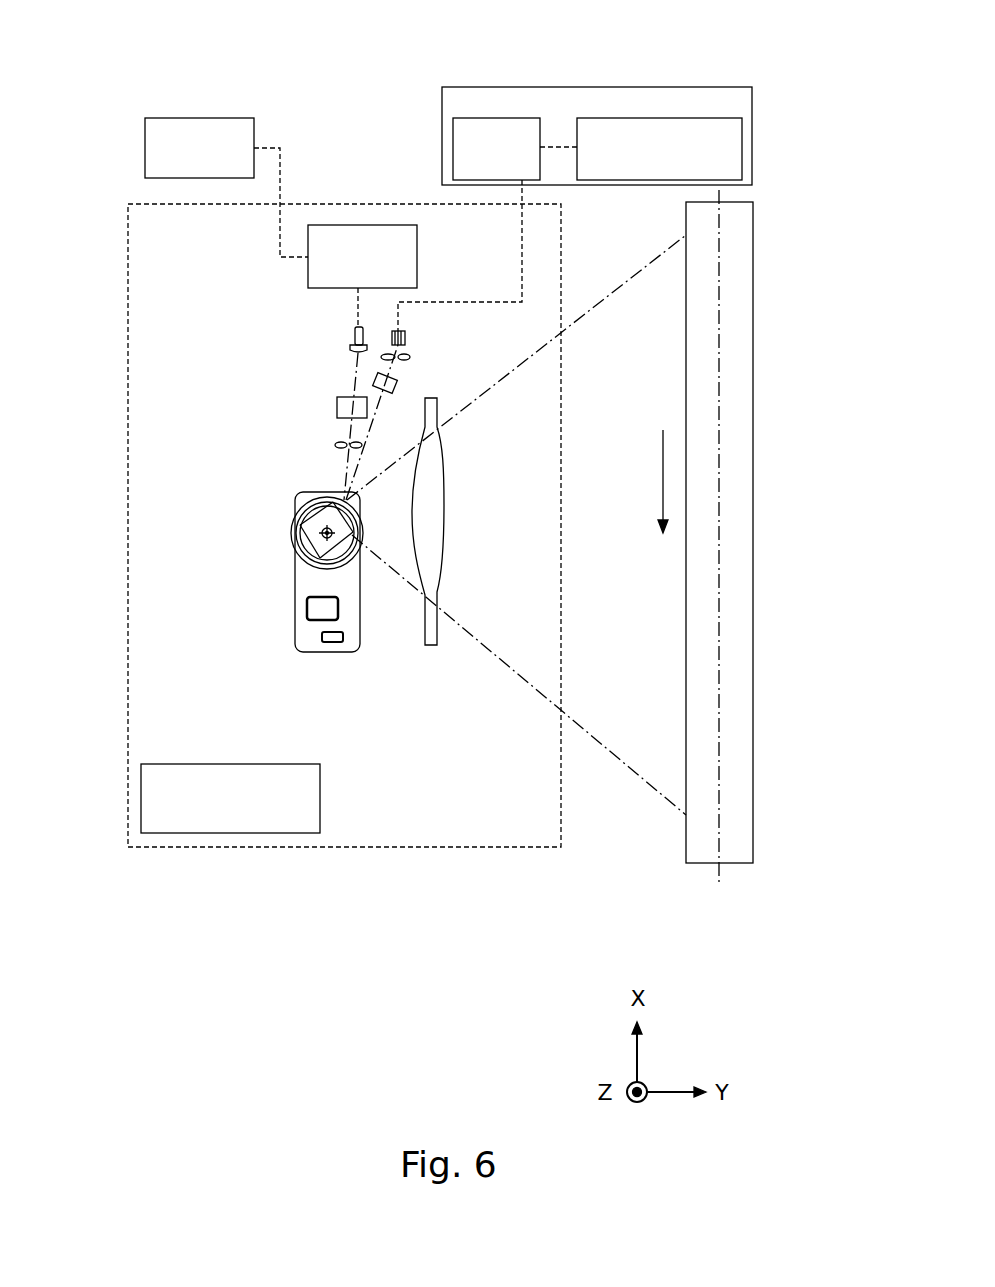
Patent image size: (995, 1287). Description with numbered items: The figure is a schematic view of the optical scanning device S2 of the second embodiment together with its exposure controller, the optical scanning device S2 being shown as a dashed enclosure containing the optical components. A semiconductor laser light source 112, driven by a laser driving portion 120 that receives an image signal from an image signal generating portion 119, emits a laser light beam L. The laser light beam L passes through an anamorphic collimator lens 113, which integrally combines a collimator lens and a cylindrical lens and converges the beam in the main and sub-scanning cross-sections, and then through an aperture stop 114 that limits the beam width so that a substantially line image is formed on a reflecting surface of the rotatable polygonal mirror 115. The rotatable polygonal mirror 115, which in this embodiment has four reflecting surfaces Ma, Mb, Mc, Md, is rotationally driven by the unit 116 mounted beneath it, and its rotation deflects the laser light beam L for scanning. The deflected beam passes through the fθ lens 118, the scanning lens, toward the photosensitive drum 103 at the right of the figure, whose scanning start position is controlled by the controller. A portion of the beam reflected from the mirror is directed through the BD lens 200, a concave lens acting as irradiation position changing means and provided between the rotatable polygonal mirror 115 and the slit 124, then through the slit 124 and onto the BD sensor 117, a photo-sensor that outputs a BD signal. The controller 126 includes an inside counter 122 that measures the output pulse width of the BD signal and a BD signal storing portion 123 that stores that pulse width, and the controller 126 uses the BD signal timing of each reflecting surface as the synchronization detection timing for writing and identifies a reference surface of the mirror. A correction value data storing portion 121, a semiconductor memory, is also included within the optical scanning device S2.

The optical scanning device S2 is at (160, 353).
The image signal generating portion 119 is at (195, 118).
The laser driving portion 120 is at (360, 225).
The controller 126 is at (598, 87).
The inside counter 122 is at (515, 118).
The BD signal storing portion 123 is at (675, 118).
The photosensitive drum 103 is at (742, 553).
The semiconductor laser 112 is at (353, 345).
The laser light beam L is at (353, 377).
The anamorphic collimator lens 113 is at (338, 408).
The aperture stop 114 is at (337, 445).
The BD sensor 117 is at (405, 336).
The slit 124 is at (410, 358).
The BD lens 200 is at (398, 387).
The fθ lens 118 is at (433, 537).
The rotatable polygonal mirror 115 is at (291, 517).
The reflecting surface Ma is at (343, 494).
The reflecting surface Mb is at (293, 498).
The reflecting surface Mc is at (292, 560).
The reflecting surface Md is at (363, 545).
The light reflector 116 is at (302, 652).
The correction value data storing portion 121 is at (210, 833).